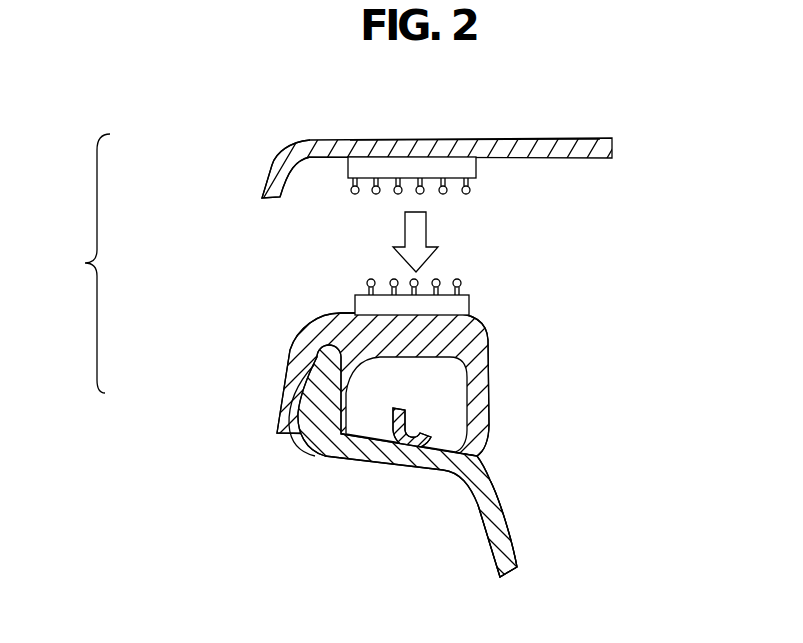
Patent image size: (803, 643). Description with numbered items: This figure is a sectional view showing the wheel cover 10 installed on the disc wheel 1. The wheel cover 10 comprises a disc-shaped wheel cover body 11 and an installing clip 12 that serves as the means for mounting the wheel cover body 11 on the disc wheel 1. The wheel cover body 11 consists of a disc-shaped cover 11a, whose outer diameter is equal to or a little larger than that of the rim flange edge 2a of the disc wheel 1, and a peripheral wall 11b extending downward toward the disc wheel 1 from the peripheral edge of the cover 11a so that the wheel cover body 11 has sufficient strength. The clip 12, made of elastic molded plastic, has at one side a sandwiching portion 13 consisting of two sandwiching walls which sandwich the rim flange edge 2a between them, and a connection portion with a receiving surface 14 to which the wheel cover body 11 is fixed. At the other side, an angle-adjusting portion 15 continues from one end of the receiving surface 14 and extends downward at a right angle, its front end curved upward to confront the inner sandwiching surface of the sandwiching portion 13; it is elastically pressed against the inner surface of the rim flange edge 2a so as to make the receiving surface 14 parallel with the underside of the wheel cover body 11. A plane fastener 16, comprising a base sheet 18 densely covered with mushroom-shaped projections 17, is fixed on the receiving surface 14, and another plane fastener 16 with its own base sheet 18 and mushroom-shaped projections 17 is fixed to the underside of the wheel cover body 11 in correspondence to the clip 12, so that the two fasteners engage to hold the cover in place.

The disc wheel 1 is at (488, 524).
The rim flange edge 2a is at (298, 417).
The wheel cover 10 is at (79, 263).
The wheel cover body 11 is at (567, 133).
The cover 11a is at (488, 142).
The peripheral wall 11b is at (267, 182).
The installing clip 12 is at (290, 325).
The sandwiching portion 13 is at (285, 405).
The receiving surface 14 is at (355, 297).
The angle-adjusting portion 15 is at (480, 400).
The plane fastener 16 is at (485, 180).
The mushroom-shaped projections 17 is at (436, 293).
The base sheet 18 is at (468, 297).